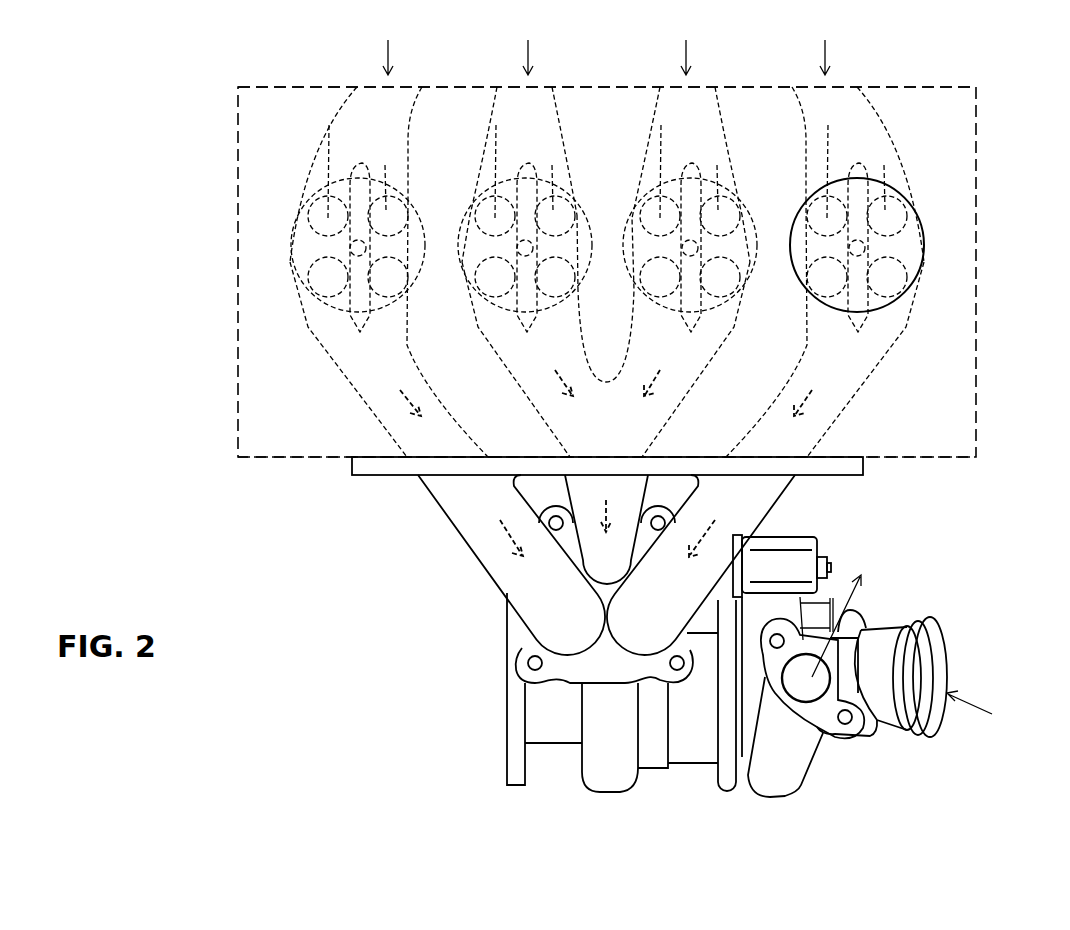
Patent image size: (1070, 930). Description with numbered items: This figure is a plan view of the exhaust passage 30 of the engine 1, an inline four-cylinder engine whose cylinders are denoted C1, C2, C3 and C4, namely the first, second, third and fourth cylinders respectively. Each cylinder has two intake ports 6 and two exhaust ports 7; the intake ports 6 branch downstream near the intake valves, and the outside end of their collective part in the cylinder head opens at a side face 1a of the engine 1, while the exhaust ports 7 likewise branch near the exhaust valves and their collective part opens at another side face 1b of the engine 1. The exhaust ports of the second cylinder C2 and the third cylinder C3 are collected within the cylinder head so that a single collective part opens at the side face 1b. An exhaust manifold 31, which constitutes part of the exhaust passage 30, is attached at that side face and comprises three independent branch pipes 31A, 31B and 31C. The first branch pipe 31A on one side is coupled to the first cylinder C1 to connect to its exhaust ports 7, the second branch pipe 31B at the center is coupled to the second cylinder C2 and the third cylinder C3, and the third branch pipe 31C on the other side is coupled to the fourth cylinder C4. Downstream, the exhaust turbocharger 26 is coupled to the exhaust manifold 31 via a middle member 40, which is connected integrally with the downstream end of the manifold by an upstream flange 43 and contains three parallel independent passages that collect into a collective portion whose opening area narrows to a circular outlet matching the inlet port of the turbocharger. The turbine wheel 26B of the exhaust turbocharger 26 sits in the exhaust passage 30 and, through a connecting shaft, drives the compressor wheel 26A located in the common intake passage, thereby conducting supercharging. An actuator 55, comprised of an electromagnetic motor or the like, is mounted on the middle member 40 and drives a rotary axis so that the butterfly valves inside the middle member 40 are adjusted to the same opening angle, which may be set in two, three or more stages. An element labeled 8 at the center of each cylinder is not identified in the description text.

The engine 1 is at (232, 316).
The side face of the engine 1a is at (942, 87).
The another side face of the engine 1b is at (942, 458).
The No. 1 cylinder C1 is at (293, 250).
The No. 2 cylinder C2 is at (460, 247).
The No. 3 cylinder C3 is at (628, 243).
The No. 4 cylinder C4 is at (795, 242).
The intake port 6 is at (380, 190).
The exhaust port 7 is at (330, 293).
The fuel injector 8 is at (367, 248).
The exhaust passage 30 is at (470, 659).
The exhaust manifold 31 is at (455, 549).
The No. 1 branch pipe 31A is at (461, 565).
The No. 2 branch pipe 31B is at (625, 497).
The No. 3 branch pipe 31C is at (728, 541).
The middle member 40 is at (543, 689).
The upstream flange 43 is at (592, 667).
The actuator 55 is at (800, 575).
The exhaust turbocharger 26 is at (761, 705).
The compressor wheel 26A is at (742, 752).
The turbine wheel 26B is at (600, 782).